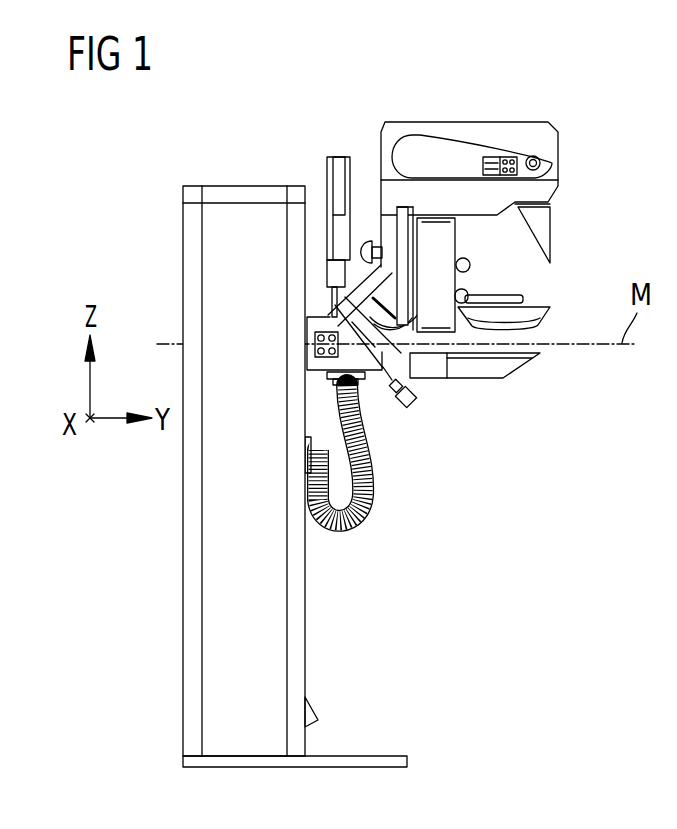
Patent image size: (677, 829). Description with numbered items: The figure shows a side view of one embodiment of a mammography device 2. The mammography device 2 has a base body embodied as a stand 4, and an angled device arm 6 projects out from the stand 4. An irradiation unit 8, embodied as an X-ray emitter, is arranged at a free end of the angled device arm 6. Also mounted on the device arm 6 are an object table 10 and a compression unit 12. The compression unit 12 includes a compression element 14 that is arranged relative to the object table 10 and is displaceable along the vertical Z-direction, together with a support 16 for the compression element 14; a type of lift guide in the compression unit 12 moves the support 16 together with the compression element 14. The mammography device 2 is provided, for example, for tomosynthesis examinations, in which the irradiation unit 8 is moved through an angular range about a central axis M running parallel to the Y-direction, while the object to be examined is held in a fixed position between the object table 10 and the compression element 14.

The mammography device 2 is at (288, 138).
The stand 4 is at (192, 653).
The angled device arm 6 is at (405, 347).
The irradiation unit 8 is at (538, 190).
The object table 10 is at (540, 355).
The compression unit 12 is at (472, 279).
The compression element 14 is at (550, 314).
The support 16 is at (523, 300).